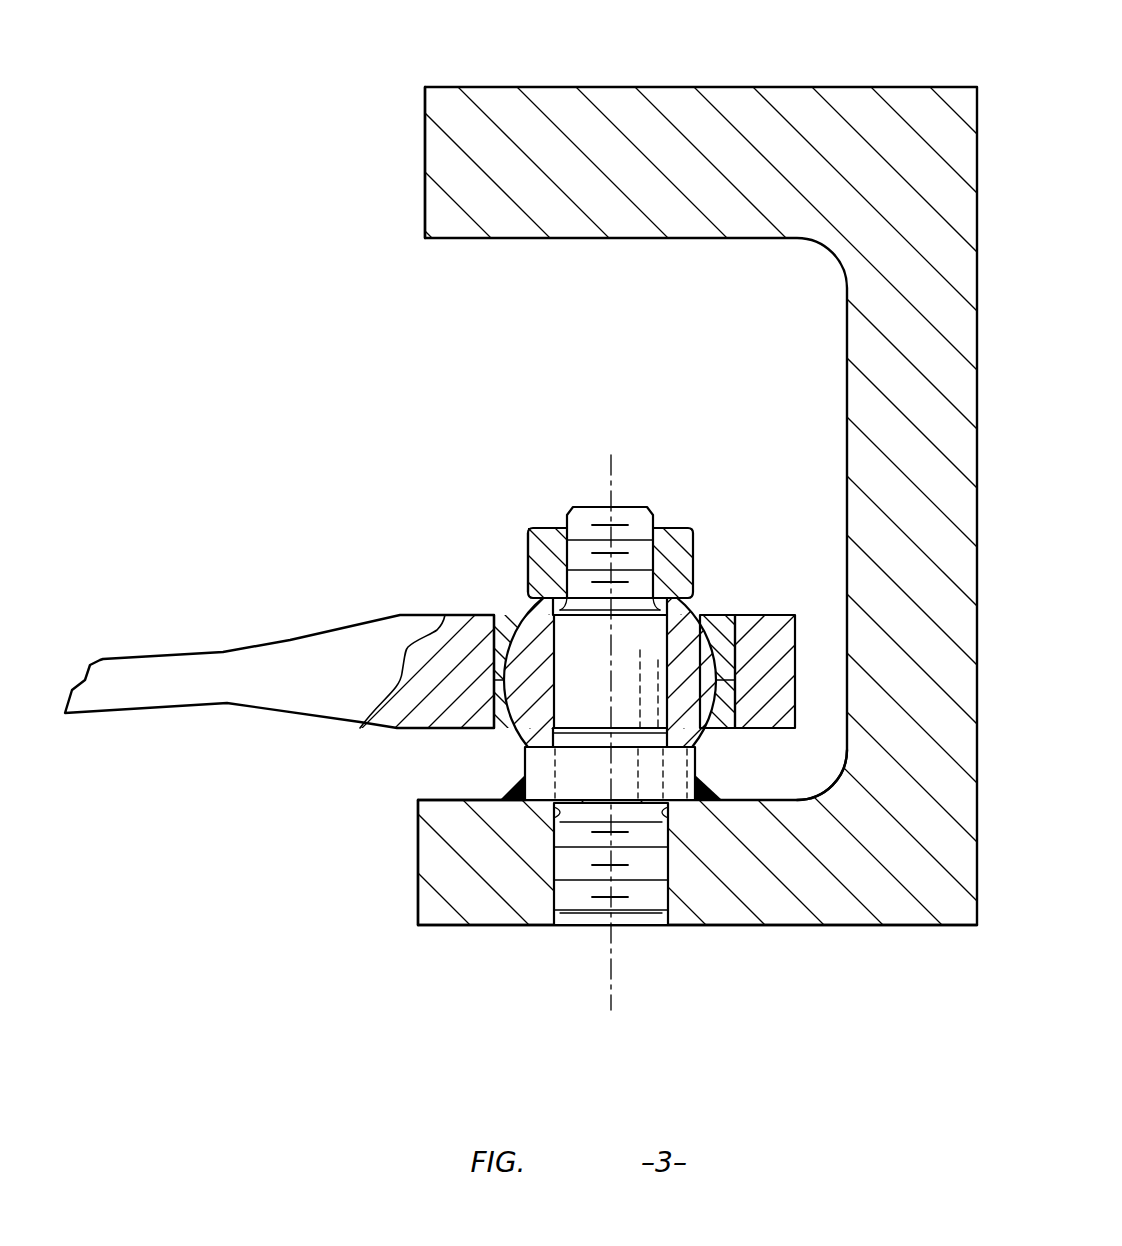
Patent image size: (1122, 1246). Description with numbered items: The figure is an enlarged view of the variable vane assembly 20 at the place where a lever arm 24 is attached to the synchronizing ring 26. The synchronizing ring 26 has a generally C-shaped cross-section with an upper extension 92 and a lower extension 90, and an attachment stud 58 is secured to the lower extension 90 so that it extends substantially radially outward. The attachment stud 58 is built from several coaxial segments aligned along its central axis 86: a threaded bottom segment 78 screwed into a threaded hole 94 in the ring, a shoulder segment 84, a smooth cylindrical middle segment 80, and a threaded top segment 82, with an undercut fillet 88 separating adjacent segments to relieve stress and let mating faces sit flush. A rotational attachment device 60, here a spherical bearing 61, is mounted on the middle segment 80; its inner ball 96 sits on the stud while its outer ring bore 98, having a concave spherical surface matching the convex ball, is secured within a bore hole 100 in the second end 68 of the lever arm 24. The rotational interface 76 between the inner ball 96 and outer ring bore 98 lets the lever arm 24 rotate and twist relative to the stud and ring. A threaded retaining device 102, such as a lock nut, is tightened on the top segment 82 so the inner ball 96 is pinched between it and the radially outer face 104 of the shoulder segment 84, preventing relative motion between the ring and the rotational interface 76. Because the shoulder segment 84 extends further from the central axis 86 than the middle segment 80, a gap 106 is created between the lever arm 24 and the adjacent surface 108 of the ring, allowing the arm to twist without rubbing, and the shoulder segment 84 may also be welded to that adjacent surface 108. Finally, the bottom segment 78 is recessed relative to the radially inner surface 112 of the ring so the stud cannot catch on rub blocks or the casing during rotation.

The variable vane assembly 20 is at (264, 391).
The lever arm 24 is at (181, 645).
The synchronizing ring 26 is at (676, 82).
The attachment stud 58 is at (628, 493).
The rotational attachment device 60 is at (606, 633).
The bearing 61 is at (701, 595).
The second end 68 is at (797, 673).
The rotational interface 76 is at (457, 687).
The bottom segment 78 is at (648, 868).
The middle segment 80 is at (587, 652).
The top segment 82 is at (593, 512).
The shoulder segment 84 is at (550, 783).
The central axis 86 is at (605, 965).
The undercut fillet 88 is at (582, 601).
The lower extension 90 is at (457, 890).
The upper extension 92 is at (425, 156).
The threaded hole 94 is at (548, 868).
The inner ball 96 is at (527, 700).
The outer ring bore 98 is at (722, 633).
The bore hole 100 is at (606, 633).
The retaining device 102 is at (528, 547).
The radially outer face 104 is at (694, 745).
The gap 106 is at (413, 797).
The adjacent surface 108 is at (748, 800).
The radially inner surface 112 is at (845, 925).